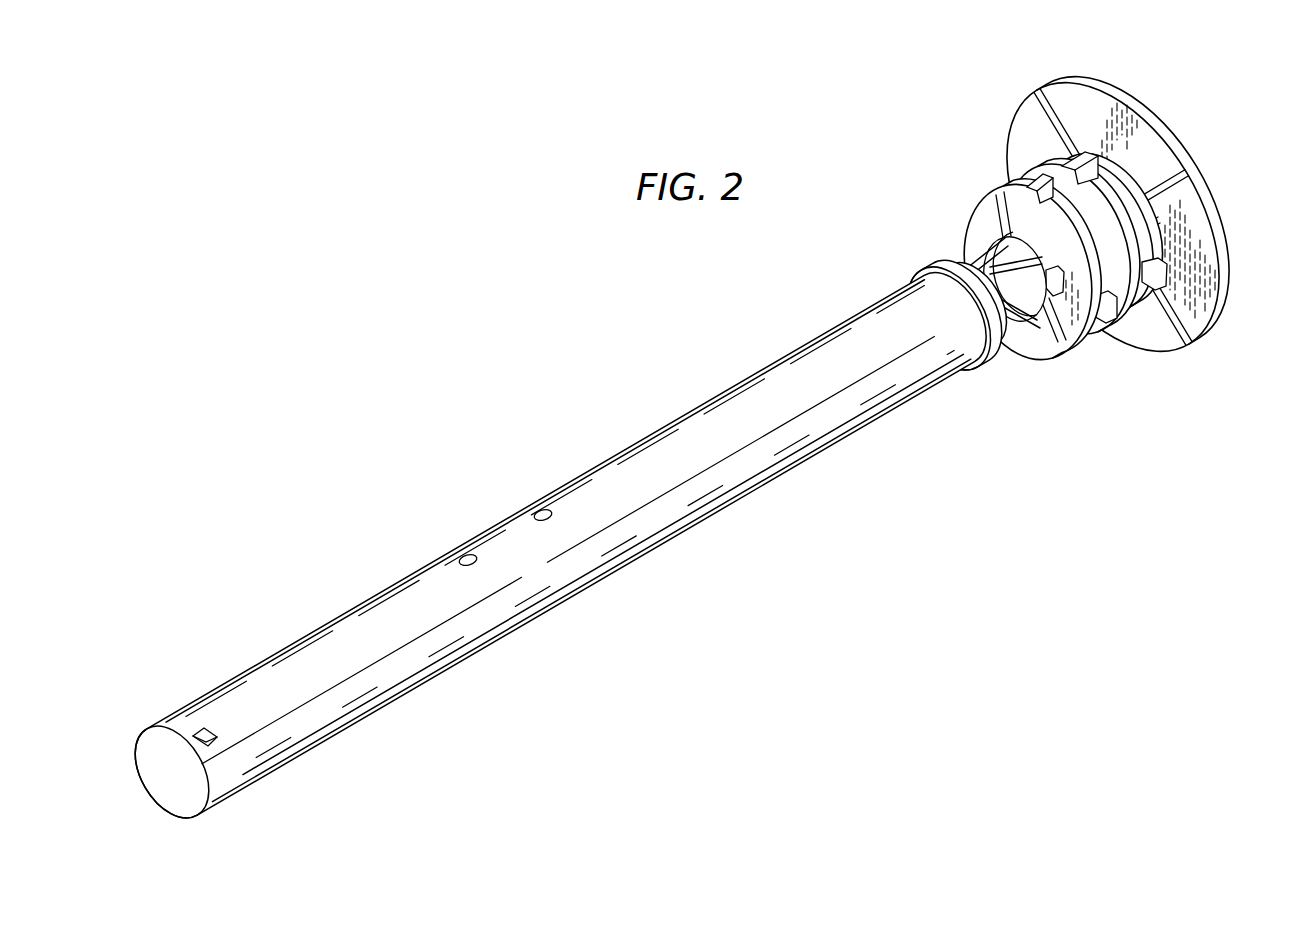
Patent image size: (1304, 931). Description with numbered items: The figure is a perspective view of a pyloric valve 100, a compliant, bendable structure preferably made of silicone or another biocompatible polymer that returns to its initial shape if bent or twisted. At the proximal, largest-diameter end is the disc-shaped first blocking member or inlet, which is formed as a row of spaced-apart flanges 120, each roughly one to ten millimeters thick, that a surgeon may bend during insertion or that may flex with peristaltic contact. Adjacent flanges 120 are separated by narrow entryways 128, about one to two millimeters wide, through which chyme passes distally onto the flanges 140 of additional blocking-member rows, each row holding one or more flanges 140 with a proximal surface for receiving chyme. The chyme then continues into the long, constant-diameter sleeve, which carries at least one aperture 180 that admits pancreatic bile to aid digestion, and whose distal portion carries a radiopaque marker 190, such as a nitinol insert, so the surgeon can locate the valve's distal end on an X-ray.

The pyloric valve 100 is at (497, 288).
The flange 120 is at (1095, 85).
The entryway 128 is at (1200, 170).
The flange 140 is at (1000, 199).
The aperture 180 is at (470, 553).
The radiopaque marker 190 is at (204, 728).